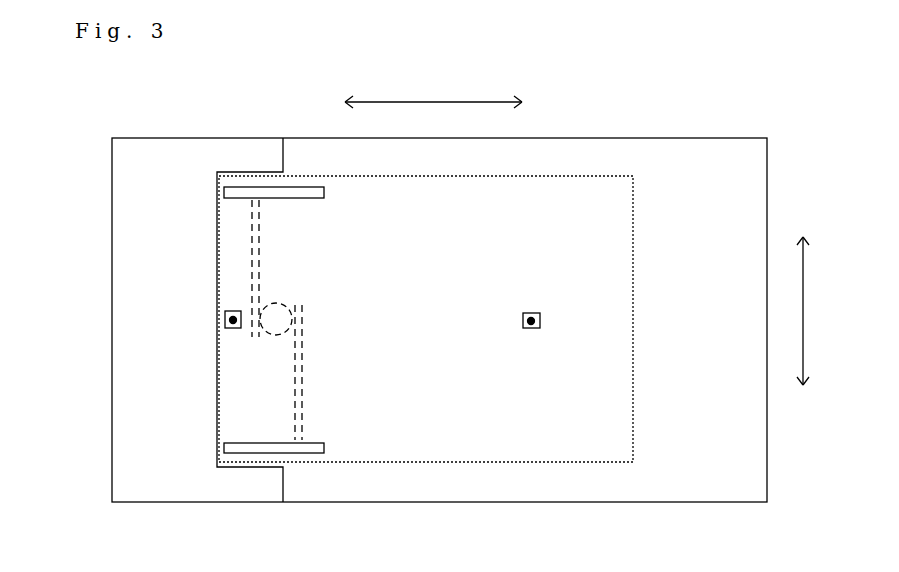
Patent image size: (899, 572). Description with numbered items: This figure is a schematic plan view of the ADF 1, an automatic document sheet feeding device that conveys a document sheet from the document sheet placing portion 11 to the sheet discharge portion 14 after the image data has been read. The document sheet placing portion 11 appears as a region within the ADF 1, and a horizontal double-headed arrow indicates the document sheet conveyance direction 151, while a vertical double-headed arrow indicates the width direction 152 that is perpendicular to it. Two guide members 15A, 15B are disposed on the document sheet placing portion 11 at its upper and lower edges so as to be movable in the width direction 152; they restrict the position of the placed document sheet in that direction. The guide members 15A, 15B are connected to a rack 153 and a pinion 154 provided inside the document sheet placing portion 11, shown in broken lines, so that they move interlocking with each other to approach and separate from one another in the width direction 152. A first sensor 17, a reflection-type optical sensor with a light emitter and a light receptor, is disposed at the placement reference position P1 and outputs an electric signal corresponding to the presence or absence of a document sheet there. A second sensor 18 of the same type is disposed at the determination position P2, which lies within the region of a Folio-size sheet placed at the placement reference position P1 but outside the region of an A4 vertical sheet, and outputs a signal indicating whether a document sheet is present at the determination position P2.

The ADF 1 is at (130, 108).
The document sheet placing portion 11 is at (571, 462).
The sheet discharge portion 14 is at (696, 502).
The guide member 15A is at (324, 191).
The guide member 15B is at (324, 446).
The document sheet conveyance direction 151 is at (435, 101).
The width direction 152 is at (804, 313).
The rack 153 is at (262, 236).
The pinion 154 is at (275, 336).
The first sensor 17 is at (233, 310).
The second sensor 18 is at (531, 312).
The placement reference position P1 is at (224, 319).
The determination position P2 is at (522, 320).